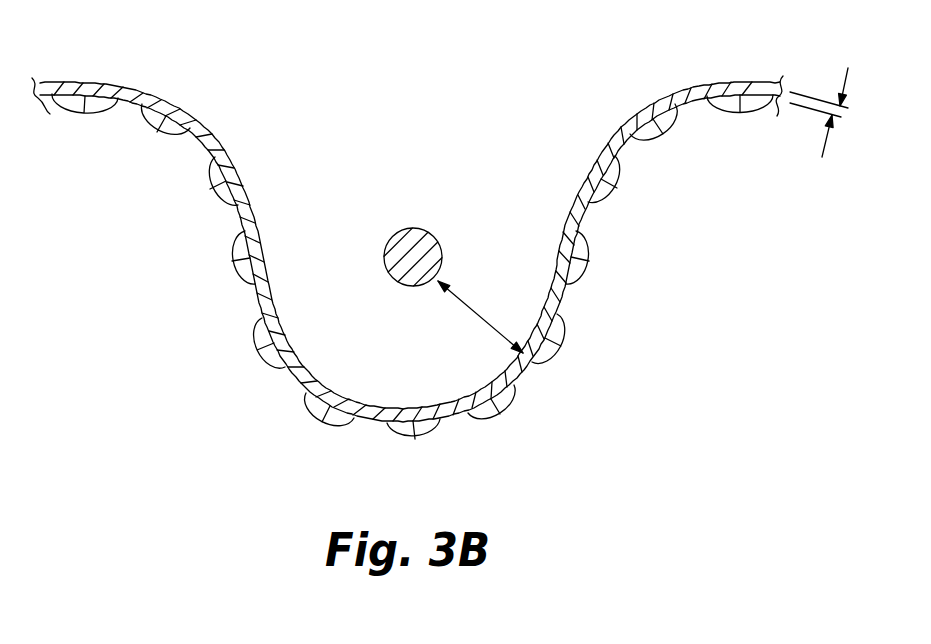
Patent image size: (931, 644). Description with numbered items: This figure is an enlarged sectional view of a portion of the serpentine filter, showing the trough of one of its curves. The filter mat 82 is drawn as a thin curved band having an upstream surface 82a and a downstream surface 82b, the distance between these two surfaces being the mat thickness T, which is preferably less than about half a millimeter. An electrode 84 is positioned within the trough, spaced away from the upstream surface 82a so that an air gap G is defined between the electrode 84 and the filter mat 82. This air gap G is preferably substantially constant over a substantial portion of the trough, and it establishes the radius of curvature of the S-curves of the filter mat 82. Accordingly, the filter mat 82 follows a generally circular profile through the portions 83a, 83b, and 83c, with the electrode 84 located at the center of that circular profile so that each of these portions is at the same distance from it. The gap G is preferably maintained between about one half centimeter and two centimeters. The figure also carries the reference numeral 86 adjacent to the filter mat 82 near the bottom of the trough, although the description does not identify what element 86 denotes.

The filter mat 82 is at (702, 104).
The upstream surface 82a is at (687, 87).
The downstream surface 82b is at (628, 143).
The portion 83a is at (397, 407).
The portion 83b is at (266, 258).
The portion 83c is at (555, 268).
The electrode 84 is at (417, 227).
The pad 86 is at (516, 407).
The air gap G is at (490, 324).
The thickness T is at (843, 70).